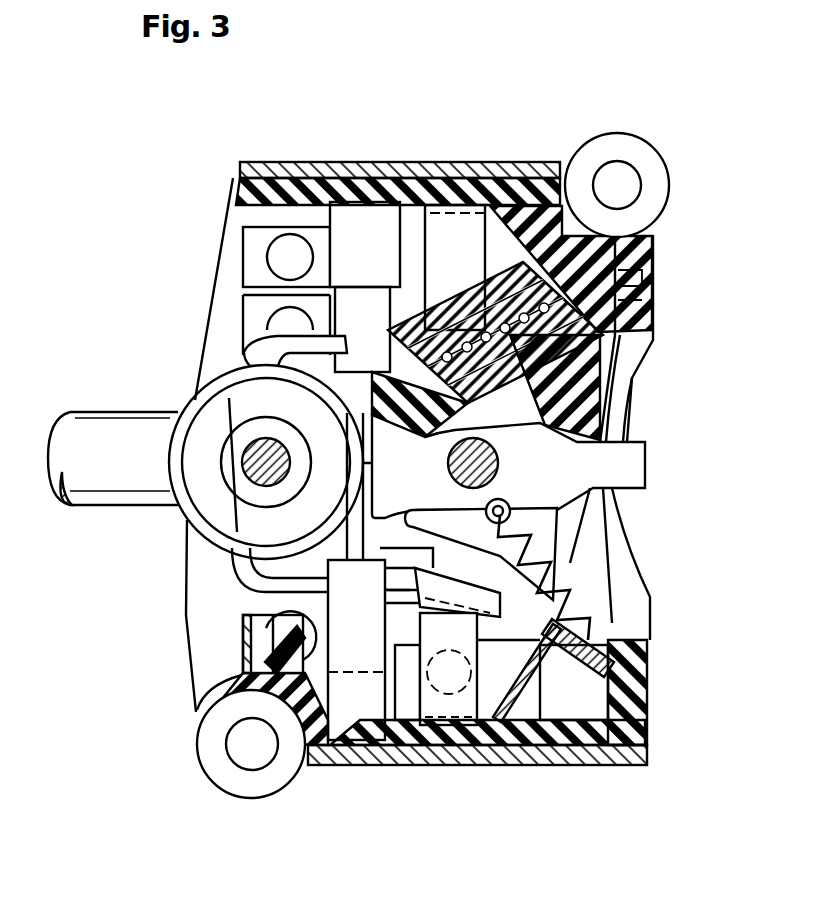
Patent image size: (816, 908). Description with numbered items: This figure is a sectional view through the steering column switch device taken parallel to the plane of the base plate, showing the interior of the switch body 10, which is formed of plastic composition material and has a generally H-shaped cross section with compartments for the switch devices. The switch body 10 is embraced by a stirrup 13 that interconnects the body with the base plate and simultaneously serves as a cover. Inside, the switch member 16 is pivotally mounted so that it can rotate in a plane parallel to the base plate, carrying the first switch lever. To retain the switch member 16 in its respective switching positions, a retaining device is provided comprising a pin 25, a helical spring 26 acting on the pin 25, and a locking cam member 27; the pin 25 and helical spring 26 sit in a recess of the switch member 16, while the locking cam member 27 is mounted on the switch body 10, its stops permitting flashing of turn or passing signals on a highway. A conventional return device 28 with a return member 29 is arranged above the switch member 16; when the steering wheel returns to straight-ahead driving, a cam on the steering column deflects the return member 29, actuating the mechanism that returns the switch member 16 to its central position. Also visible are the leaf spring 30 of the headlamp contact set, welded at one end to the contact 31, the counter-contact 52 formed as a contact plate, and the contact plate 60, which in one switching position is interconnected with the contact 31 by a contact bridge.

The stirrup 13 is at (372, 176).
The locking cam member 27 is at (622, 262).
The pin 25 is at (598, 330).
The helical spring 26 is at (585, 333).
The switch member 16 is at (590, 412).
The return member 29 is at (610, 463).
The return device 28 is at (262, 385).
The contact plate 60 is at (644, 665).
The switch body 10 is at (643, 708).
The leaf spring 30 is at (350, 713).
The counter-contact 52 is at (440, 713).
The contact 31 is at (505, 740).